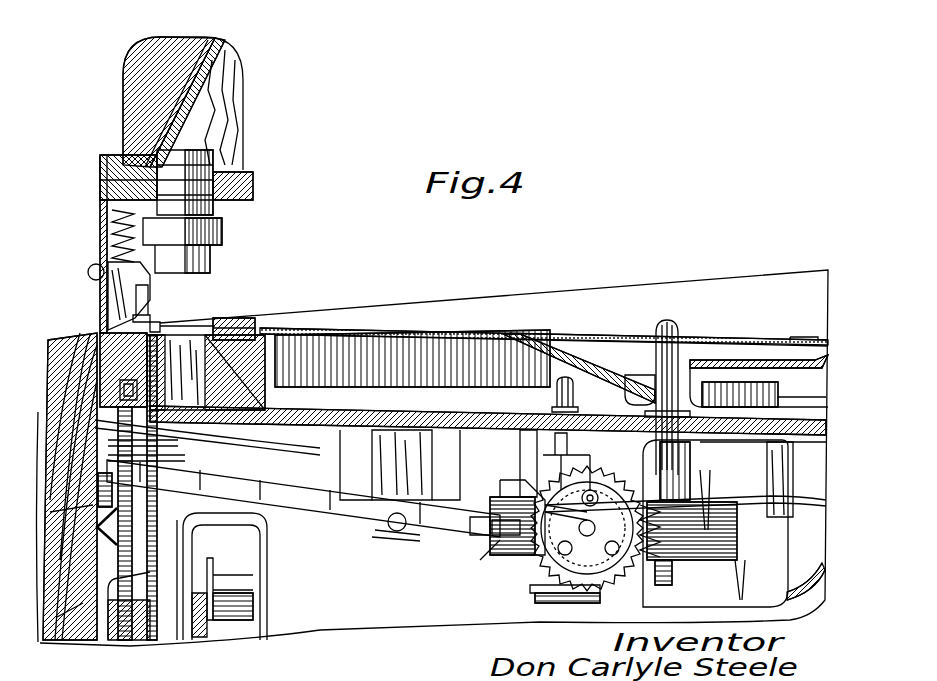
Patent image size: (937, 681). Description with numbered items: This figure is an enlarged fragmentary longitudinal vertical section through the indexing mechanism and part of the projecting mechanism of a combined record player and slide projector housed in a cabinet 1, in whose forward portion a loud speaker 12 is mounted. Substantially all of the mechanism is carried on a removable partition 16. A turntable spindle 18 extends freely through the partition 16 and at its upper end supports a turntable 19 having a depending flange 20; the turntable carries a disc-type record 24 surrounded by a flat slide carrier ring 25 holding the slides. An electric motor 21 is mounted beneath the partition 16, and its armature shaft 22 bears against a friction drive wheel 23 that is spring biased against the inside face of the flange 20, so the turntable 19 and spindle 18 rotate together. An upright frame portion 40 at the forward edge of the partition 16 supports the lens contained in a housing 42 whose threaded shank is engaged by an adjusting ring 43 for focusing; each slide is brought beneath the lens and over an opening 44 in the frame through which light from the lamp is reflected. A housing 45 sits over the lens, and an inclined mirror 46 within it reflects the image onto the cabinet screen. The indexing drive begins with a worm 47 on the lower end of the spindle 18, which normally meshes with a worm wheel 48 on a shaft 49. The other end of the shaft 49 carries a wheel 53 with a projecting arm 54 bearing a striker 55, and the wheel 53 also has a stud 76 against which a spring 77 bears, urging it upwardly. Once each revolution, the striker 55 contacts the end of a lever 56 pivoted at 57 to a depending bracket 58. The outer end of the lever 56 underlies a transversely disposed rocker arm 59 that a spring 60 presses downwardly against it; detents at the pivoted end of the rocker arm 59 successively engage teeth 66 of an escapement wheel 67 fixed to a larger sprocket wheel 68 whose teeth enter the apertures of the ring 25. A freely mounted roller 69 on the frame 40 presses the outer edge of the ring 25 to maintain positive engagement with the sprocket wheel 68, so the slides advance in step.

The cabinet 1 is at (65, 628).
The loud speaker 12 is at (125, 635).
The partition 16 is at (282, 440).
The turntable spindle 18 is at (683, 330).
The turntable 19 is at (535, 335).
The depending flange 20 is at (415, 335).
The electric motor 21 is at (496, 565).
The armature shaft 22 is at (555, 392).
The friction drive wheel 23 is at (625, 386).
The disc-type record 24 is at (350, 328).
The slide carrier ring 25 is at (235, 318).
The upright frame portion 40 is at (100, 213).
The lens housing 42 is at (222, 232).
The adjusting ring 43 is at (253, 190).
The opening 44 is at (195, 365).
The housing 45 is at (132, 83).
The inclined mirror 46 is at (218, 58).
The worm 47 is at (672, 570).
The worm wheel 48 is at (612, 598).
The shaft 49 is at (587, 536).
The wheel 53 is at (530, 555).
The projecting arm 54 is at (525, 500).
The striker 55 is at (480, 517).
The lever 56 is at (300, 515).
The pivot 57 is at (390, 535).
The depending bracket 58 is at (415, 470).
The rocker arm 59 is at (182, 443).
The spring 60 is at (228, 432).
The teeth 66 is at (125, 552).
The escapement wheel 67 is at (185, 458).
The sprocket wheel 68 is at (170, 322).
The roller 69 is at (148, 300).
The stud 76 is at (592, 490).
The spring 77 is at (637, 495).